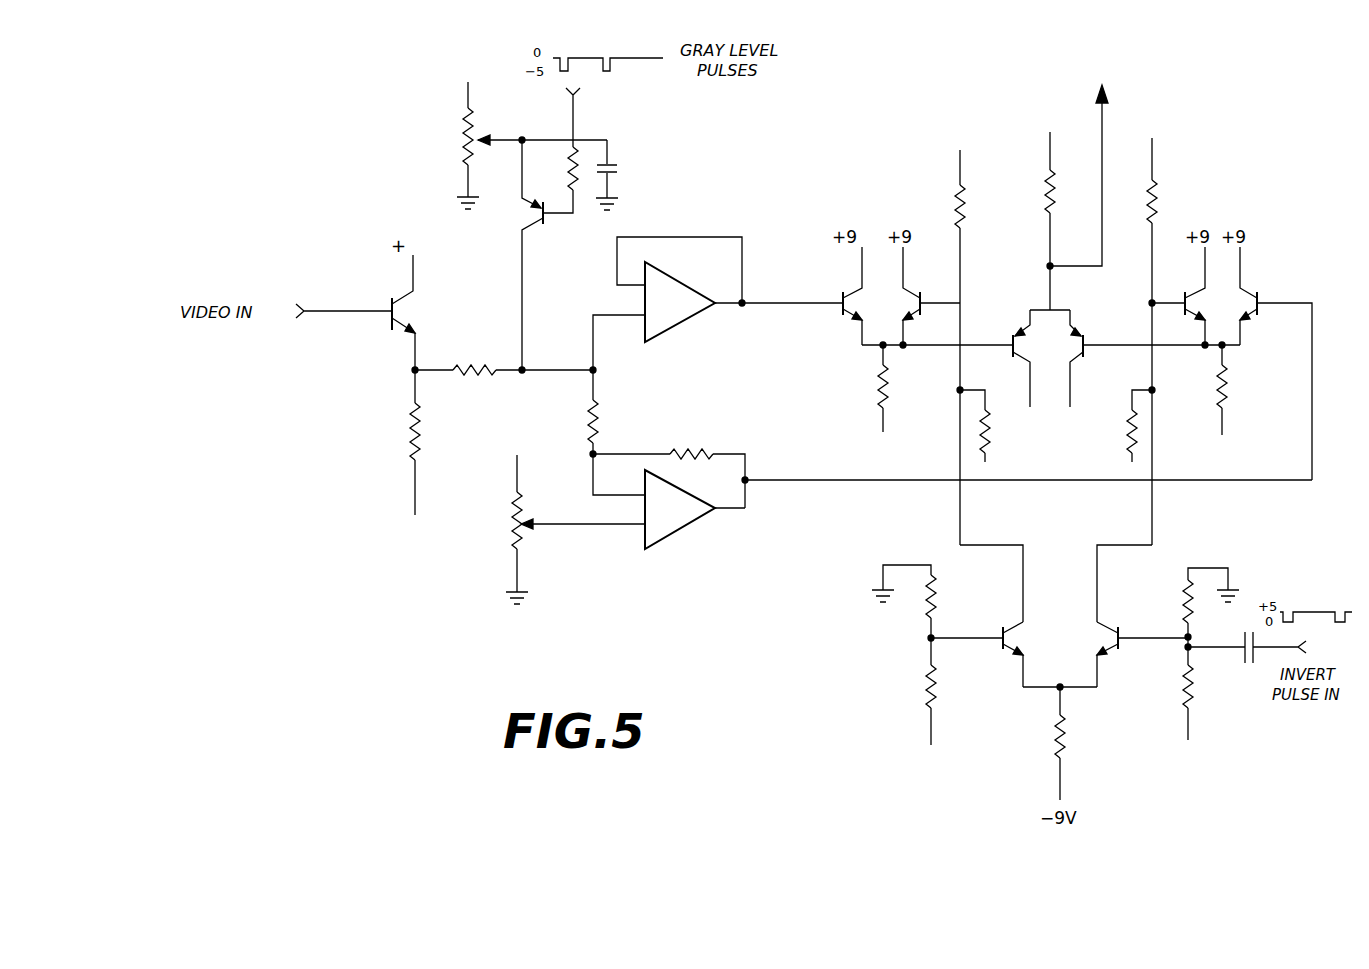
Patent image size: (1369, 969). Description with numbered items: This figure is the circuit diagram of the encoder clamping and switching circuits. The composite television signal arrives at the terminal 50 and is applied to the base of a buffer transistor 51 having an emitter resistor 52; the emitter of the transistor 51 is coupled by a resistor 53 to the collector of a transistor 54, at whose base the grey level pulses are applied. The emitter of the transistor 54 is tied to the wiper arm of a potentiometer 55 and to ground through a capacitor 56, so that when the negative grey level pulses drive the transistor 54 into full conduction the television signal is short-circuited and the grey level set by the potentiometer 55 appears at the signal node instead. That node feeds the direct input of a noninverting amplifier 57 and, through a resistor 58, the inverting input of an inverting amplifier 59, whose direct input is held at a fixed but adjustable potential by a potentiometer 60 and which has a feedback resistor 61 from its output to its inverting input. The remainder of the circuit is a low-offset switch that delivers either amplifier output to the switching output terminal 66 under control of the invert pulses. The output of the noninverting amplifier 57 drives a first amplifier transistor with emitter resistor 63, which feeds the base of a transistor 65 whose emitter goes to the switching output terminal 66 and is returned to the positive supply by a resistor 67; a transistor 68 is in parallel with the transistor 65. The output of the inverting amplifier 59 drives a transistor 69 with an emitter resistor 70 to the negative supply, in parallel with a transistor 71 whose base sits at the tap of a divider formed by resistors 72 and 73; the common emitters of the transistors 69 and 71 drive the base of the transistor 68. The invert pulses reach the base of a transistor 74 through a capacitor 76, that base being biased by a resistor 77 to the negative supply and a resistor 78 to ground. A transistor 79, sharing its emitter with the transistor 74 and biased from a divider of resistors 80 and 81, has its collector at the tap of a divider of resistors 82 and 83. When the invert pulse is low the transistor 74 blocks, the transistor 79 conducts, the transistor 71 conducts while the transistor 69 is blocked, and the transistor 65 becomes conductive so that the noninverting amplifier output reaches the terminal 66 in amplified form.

The terminal 50 is at (356, 296).
The transistor 51 is at (403, 311).
The emitter resistor 52 is at (408, 430).
The resistor 53 is at (492, 340).
The transistor 54 is at (530, 210).
The potentiometer 55 is at (462, 138).
The capacitor 56 is at (608, 138).
The noninverting amplifier 57 is at (650, 343).
The resistor 58 is at (603, 430).
The inverting amplifier 59 is at (645, 545).
The potentiometer 60 is at (527, 512).
The feedback resistor 61 is at (700, 452).
The emitter resistor 63 is at (878, 396).
The transistor 65 is at (1010, 356).
The switching output terminal 66 is at (1104, 120).
The resistor 67 is at (1046, 212).
The transistor 68 is at (1088, 338).
The transistor 69 is at (1250, 300).
The resistor 70 is at (1230, 390).
The transistor 71 is at (1184, 314).
The resistor 72 is at (1158, 198).
The resistor 73 is at (1128, 428).
The transistor 74 is at (1110, 638).
The capacitor 76 is at (1249, 666).
The resistor 77 is at (1182, 690).
The resistor 78 is at (1184, 592).
The transistor 79 is at (1006, 650).
The resistor 80 is at (938, 598).
The resistor 81 is at (925, 684).
The resistor 82 is at (963, 206).
The resistor 83 is at (990, 430).